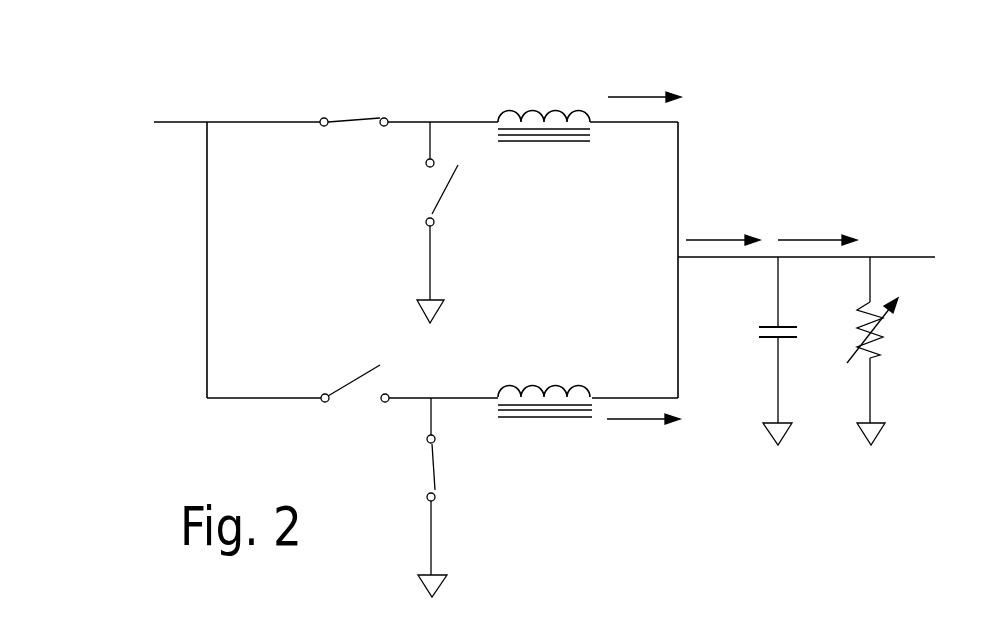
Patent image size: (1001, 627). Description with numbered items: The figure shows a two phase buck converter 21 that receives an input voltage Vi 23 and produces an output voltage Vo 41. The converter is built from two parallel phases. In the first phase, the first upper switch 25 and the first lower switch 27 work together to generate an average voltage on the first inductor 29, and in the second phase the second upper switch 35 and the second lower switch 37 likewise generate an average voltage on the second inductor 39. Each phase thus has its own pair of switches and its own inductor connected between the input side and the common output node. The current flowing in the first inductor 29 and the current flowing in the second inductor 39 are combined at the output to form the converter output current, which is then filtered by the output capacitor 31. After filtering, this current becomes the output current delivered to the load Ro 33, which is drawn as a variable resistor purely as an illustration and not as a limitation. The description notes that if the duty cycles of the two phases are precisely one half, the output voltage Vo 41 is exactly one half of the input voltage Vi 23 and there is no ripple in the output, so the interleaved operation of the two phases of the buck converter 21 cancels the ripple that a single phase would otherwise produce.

The two phase buck converter 21 is at (170, 47).
The input voltage Vi 23 is at (155, 150).
The switch S1a 25 is at (350, 110).
The switch S1b 27 is at (422, 182).
The inductor L1 29 is at (578, 103).
The capacitor C1 31 is at (792, 357).
The load Ro 33 is at (885, 368).
The switch S2a 35 is at (345, 403).
The switch S2b 37 is at (417, 462).
The inductor L2 39 is at (525, 435).
The output voltage Vo 41 is at (913, 252).